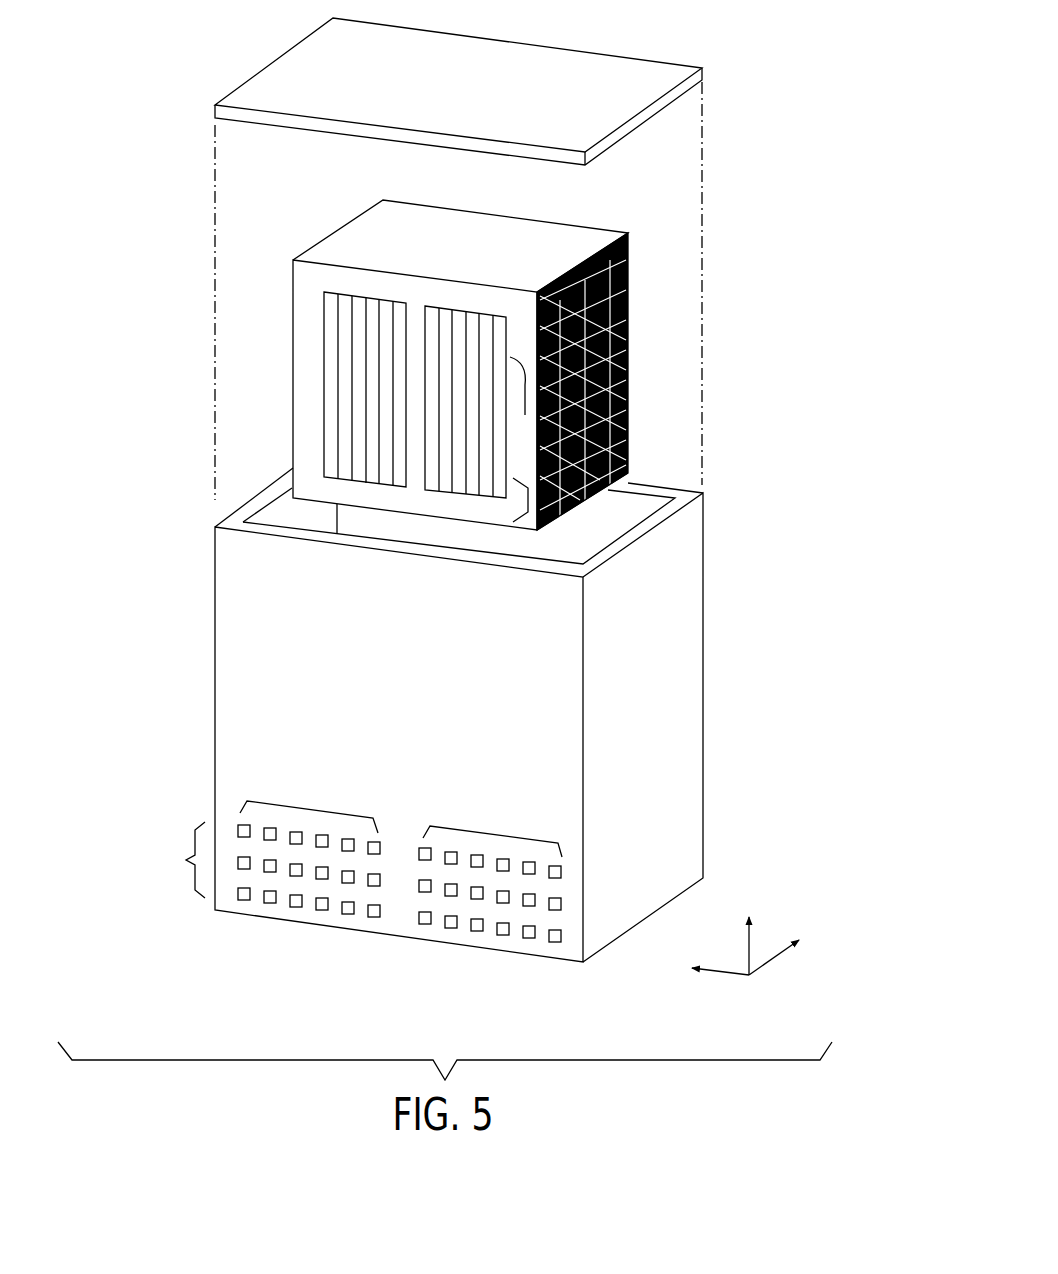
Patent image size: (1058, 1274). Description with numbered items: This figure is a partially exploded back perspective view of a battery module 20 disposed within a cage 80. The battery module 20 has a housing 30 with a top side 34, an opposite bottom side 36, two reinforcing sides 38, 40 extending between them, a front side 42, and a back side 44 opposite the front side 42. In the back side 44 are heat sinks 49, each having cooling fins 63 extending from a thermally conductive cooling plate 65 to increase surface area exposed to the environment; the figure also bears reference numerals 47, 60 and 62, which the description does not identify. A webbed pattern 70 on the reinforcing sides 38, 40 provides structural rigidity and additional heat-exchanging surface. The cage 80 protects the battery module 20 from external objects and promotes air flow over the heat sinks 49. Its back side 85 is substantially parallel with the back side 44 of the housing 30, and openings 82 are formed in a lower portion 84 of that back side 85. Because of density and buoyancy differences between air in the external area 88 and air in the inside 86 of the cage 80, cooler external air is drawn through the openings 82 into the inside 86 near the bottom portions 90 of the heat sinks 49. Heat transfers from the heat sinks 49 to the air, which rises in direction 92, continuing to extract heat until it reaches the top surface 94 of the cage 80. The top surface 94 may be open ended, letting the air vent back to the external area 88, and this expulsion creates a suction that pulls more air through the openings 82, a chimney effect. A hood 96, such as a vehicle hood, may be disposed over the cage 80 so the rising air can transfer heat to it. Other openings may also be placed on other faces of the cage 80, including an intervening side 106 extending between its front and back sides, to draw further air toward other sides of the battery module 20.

The battery module 20 is at (258, 237).
The housing 30 is at (243, 283).
The top side 34 is at (428, 233).
The bottom side 36 is at (583, 505).
The reinforcing side 38 is at (630, 358).
The reinforcing side 40 is at (292, 278).
The front side 42 is at (630, 262).
The back side 44 is at (522, 310).
The second grille 47 is at (528, 500).
The heat sink 49 is at (320, 338).
The first axis 60 is at (777, 960).
The second axis 62 is at (728, 975).
The cooling fins 63 is at (362, 438).
The thermally conductive cooling plate 65 is at (419, 318).
The webbed pattern 70 is at (630, 310).
The cage 80 is at (682, 673).
The openings 82 is at (310, 806).
The lower portion 84 is at (186, 860).
The back side 85 is at (238, 623).
The inside 86 is at (275, 512).
The external area 88 is at (263, 963).
The bottom portions 90 is at (548, 527).
The direction 92 is at (752, 945).
The top surface 94 is at (230, 525).
The hood 96 is at (703, 76).
The intervening side 106 is at (213, 752).